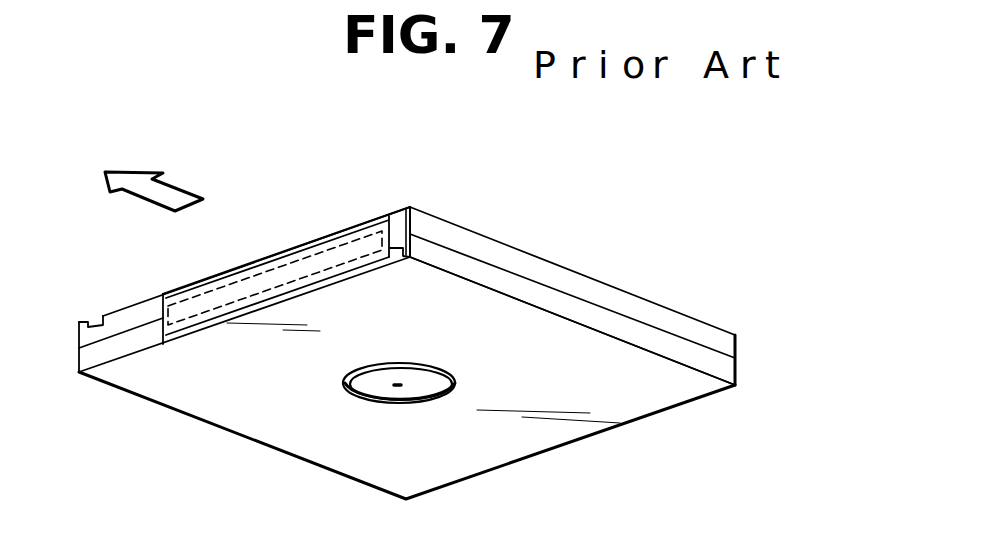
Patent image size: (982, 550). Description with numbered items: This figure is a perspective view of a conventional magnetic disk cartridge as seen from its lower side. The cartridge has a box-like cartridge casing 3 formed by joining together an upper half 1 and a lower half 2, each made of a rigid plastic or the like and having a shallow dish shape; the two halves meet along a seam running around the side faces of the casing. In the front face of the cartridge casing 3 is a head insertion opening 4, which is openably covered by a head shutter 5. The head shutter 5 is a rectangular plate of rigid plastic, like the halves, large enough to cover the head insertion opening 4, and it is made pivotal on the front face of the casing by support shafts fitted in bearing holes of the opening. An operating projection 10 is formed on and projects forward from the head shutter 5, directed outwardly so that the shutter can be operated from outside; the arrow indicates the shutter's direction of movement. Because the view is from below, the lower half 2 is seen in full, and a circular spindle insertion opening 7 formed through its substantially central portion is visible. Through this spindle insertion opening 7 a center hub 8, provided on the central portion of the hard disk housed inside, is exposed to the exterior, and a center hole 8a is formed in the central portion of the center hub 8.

The upper half 1 is at (714, 337).
The lower half 2 is at (726, 369).
The cartridge casing 3 is at (790, 263).
The head insertion opening 4 is at (160, 314).
The head shutter 5 is at (280, 273).
The spindle insertion opening 7 is at (450, 396).
The center hub 8 is at (362, 389).
The center hole 8a is at (396, 390).
The operating projection 10 is at (396, 212).